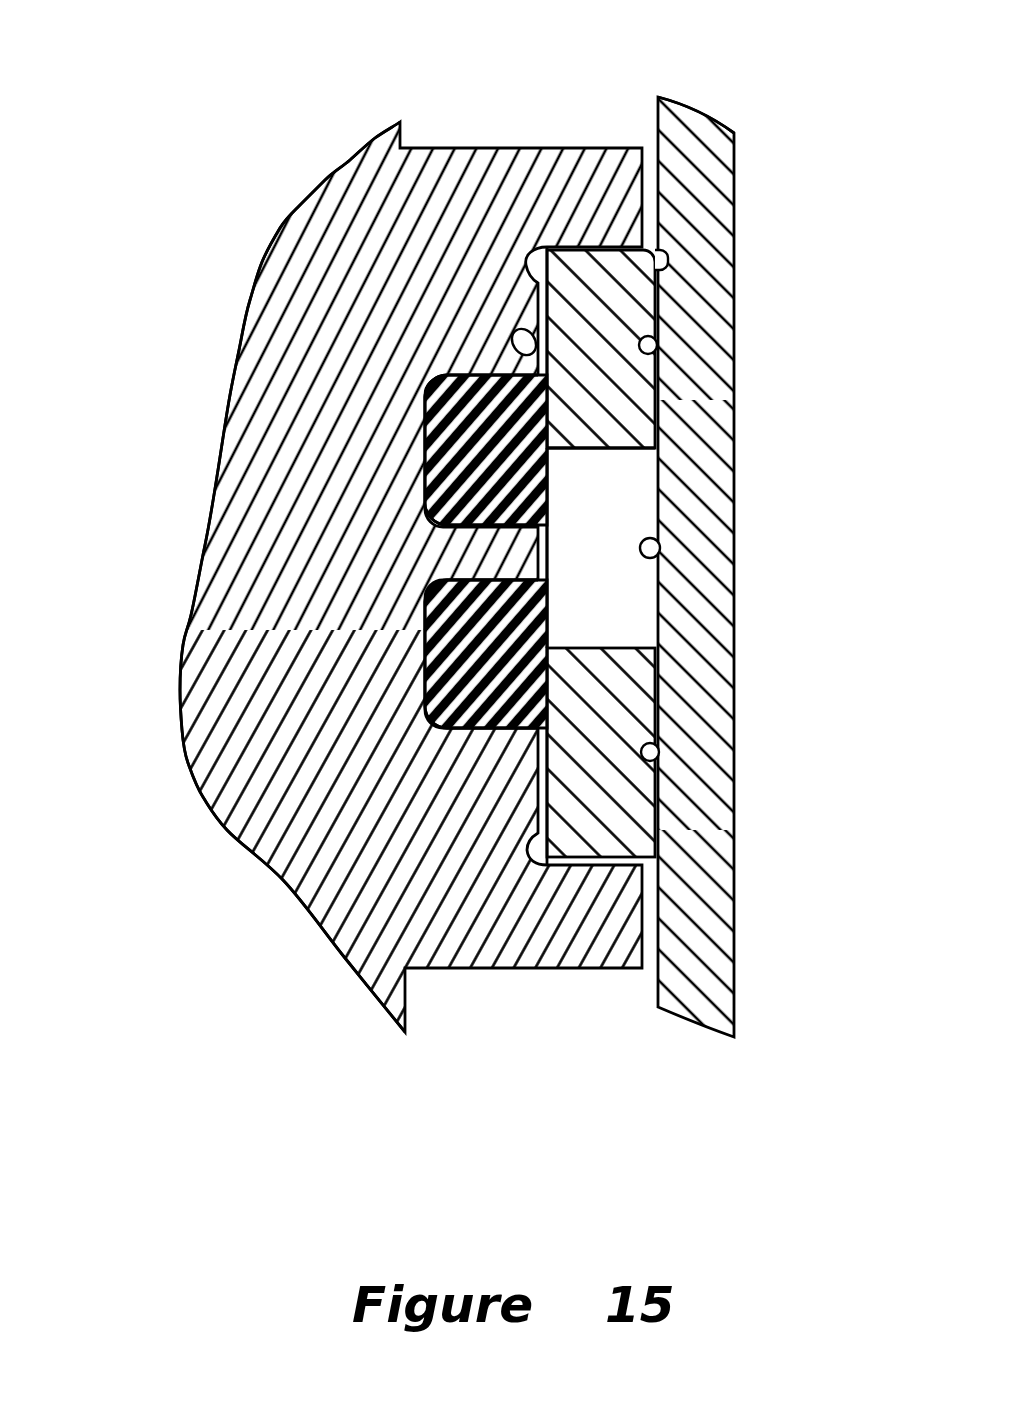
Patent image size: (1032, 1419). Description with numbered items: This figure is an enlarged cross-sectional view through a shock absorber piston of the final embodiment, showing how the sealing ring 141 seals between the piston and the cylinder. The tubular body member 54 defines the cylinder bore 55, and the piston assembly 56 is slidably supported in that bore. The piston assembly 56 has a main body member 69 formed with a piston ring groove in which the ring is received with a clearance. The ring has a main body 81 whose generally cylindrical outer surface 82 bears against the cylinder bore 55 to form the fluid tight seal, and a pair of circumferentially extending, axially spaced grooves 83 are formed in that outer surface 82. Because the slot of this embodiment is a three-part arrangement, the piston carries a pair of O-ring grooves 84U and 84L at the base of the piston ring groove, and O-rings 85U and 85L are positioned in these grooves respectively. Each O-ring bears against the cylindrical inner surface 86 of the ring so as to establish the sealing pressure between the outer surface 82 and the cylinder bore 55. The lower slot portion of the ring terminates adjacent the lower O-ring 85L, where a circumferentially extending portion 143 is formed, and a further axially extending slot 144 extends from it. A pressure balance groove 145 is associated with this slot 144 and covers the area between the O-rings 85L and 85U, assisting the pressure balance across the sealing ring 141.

The piston assembly 56 is at (266, 196).
The main body member 69 is at (310, 285).
The cylinder bore 55 is at (655, 133).
The cylindrical outer surface 82 is at (662, 246).
The tubular body member 54 is at (712, 218).
The main body 81 is at (615, 300).
The grooves 83 is at (660, 347).
The cylindrical inner surface 86 is at (530, 347).
The O-ring 85U is at (447, 444).
The O-ring groove 84U is at (445, 520).
The O-ring 85L is at (455, 662).
The O-ring groove 84L is at (435, 707).
The axially extending slot 144 is at (607, 478).
The pressure balance groove 145 is at (660, 550).
The sealing ring 141 is at (622, 590).
The circumferentially extending portion 143 is at (600, 648).